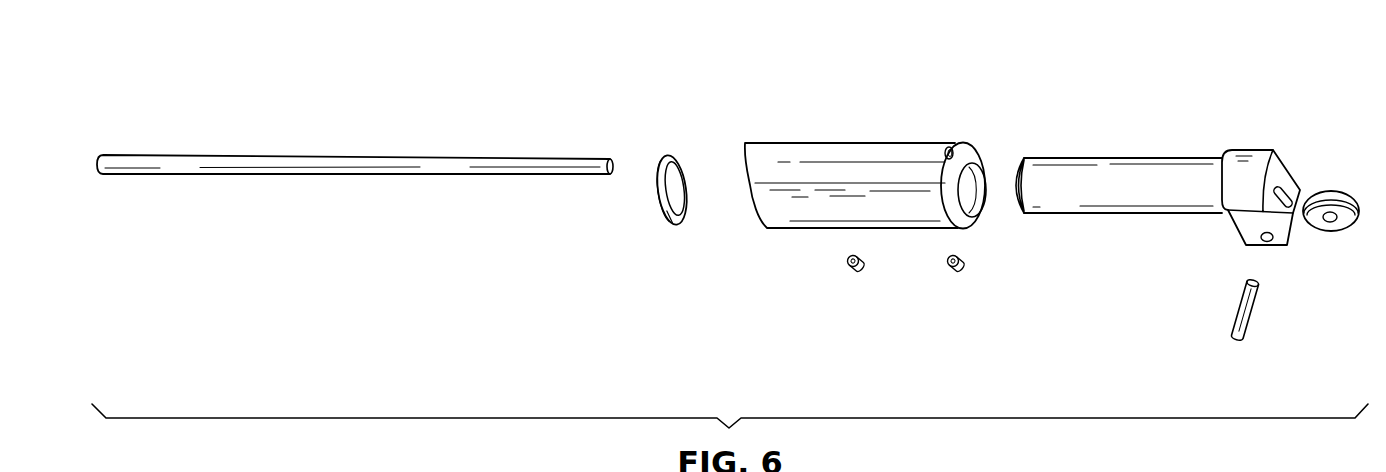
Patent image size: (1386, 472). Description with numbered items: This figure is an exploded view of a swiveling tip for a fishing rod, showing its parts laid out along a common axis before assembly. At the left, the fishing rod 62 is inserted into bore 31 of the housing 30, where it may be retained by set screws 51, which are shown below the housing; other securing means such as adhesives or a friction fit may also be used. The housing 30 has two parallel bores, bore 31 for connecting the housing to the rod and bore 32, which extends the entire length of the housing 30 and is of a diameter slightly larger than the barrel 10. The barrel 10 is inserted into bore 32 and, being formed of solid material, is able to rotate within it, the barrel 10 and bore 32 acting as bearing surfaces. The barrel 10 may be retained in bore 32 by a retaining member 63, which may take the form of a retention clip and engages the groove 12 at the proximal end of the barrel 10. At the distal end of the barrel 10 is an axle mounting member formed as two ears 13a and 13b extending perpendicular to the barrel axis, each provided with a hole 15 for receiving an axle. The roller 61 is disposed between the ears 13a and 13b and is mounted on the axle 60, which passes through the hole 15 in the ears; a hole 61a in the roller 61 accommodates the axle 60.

The barrel 10 is at (1100, 158).
The groove 12 is at (1022, 157).
The ear 13a is at (1234, 232).
The ear 13b is at (1297, 172).
The hole 15 is at (1268, 249).
The housing 30 is at (845, 138).
The bore 31 is at (958, 147).
The bore 32 is at (961, 193).
The set screws 51 is at (858, 274).
The axle 60 is at (1255, 328).
The roller 61 is at (1349, 190).
The hole 61a is at (1318, 226).
The fishing rod 62 is at (477, 152).
The retaining member 63 is at (683, 229).